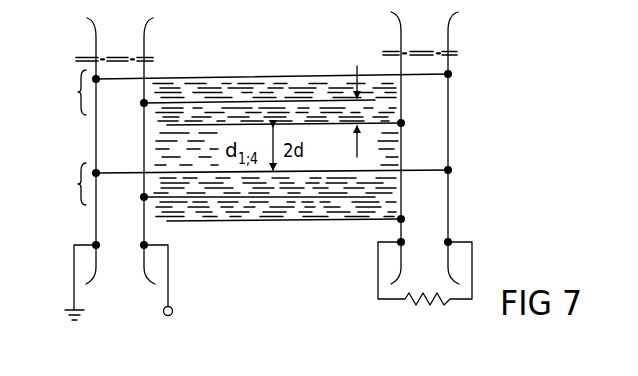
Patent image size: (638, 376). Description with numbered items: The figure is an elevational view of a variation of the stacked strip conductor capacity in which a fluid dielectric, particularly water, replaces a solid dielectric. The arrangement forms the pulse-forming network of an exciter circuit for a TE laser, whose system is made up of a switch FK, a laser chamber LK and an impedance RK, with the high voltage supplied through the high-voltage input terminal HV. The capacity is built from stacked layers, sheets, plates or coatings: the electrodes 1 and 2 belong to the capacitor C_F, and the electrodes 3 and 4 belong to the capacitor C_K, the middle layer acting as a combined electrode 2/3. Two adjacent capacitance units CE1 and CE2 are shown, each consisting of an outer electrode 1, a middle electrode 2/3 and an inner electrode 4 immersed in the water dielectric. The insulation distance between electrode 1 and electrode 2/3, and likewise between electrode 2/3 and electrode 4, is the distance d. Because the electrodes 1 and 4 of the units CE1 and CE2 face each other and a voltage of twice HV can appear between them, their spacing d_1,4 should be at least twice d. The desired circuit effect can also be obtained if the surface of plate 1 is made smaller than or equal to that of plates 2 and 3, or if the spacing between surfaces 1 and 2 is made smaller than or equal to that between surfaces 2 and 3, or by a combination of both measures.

The electrode layer of capacitor C_F 1 is at (213, 76).
The electrode layer of capacitor C_F 2 is at (259, 150).
The electrode layer of capacitor C_K 3 is at (252, 100).
The electrode layer of capacitor C_K 4 is at (320, 125).
The switch FK is at (115, 142).
The laser chamber LK is at (421, 142).
The first capacitance unit CE1 is at (64, 184).
The second capacitance unit CE2 is at (61, 92).
The high-voltage input terminal HV is at (162, 295).
The impedance RK is at (423, 306).